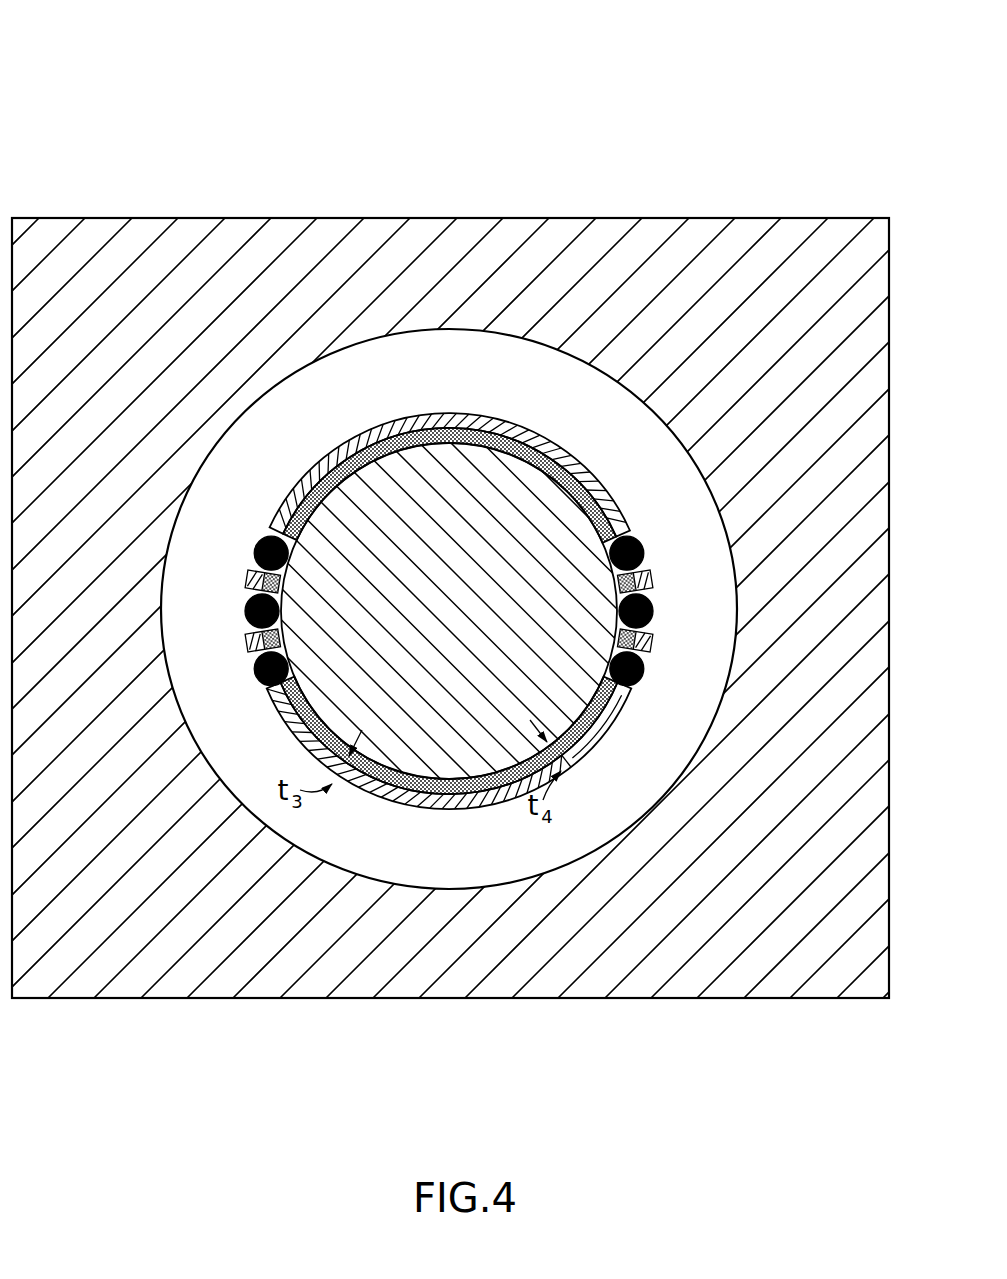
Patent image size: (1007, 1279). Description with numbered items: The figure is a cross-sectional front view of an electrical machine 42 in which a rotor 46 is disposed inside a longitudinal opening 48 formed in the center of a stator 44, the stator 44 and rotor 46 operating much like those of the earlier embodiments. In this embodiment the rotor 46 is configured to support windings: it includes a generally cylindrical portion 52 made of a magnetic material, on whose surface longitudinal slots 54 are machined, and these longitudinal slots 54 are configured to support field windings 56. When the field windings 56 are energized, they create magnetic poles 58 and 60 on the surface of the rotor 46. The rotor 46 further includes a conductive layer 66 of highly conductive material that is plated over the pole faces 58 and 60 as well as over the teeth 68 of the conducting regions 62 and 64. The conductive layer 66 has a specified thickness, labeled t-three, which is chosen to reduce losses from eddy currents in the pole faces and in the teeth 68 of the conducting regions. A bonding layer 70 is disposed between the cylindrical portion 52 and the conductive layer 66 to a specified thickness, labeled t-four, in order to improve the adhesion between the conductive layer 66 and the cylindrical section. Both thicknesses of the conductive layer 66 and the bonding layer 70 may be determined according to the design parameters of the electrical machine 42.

The electrical machine 42 is at (172, 55).
The stator 44 is at (704, 228).
The rotor 46 is at (600, 757).
The longitudinal opening 48 is at (483, 870).
The cylindrical portion 52 is at (450, 608).
The longitudinal slots 54 is at (290, 558).
The field windings 56 is at (258, 552).
The magnetic pole 58 is at (445, 471).
The magnetic pole 60 is at (445, 746).
The conducting region 62 is at (318, 594).
The conducting region 64 is at (584, 592).
The conductive layer 66 is at (495, 425).
The teeth 68 is at (643, 654).
The bonding layer 70 is at (543, 457).